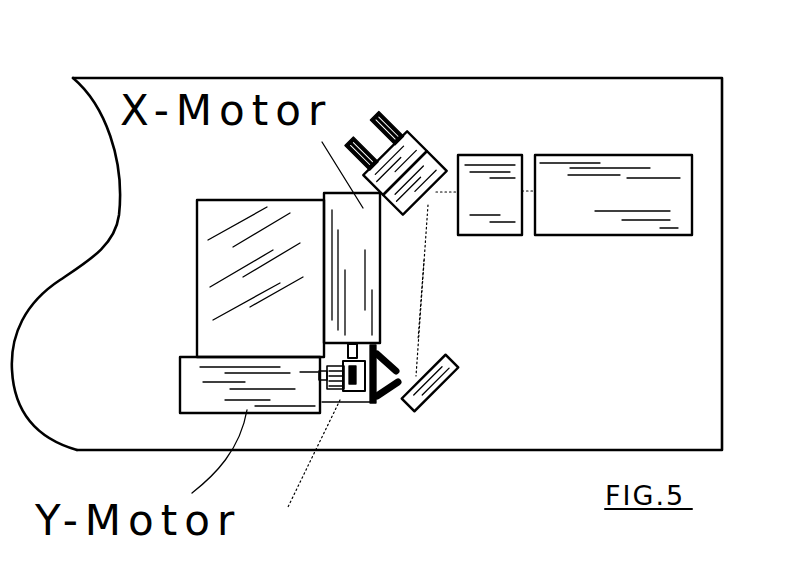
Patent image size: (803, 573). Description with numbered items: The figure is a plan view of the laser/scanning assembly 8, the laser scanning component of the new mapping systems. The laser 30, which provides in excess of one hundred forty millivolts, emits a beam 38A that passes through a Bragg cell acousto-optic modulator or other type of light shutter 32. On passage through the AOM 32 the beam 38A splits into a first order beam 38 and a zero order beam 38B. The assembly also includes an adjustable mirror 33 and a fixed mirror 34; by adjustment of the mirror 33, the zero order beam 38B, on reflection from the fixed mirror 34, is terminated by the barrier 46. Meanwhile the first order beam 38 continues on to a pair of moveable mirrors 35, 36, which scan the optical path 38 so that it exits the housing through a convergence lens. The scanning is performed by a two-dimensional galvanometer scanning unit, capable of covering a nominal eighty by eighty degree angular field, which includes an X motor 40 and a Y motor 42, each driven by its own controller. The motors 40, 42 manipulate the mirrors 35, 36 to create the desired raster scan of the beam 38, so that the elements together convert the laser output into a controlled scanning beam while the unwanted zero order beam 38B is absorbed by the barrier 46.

The laser/scanning assembly 8 is at (593, 47).
The laser 30 is at (555, 175).
The Bragg cell acousto-optic modulator (AOM) or light shutter 32 is at (478, 162).
The adjustable mirror 33 is at (402, 130).
The fixed mirror 34 is at (422, 400).
The moveable mirror 35 is at (345, 363).
The moveable mirror 36 is at (380, 407).
The first order beam (optical path) 38 is at (428, 257).
The beam from laser 38A is at (520, 196).
The zero order beam 38B is at (415, 323).
The X motor 40 is at (363, 208).
The Y motor 42 is at (185, 415).
The barrier 46 is at (385, 410).